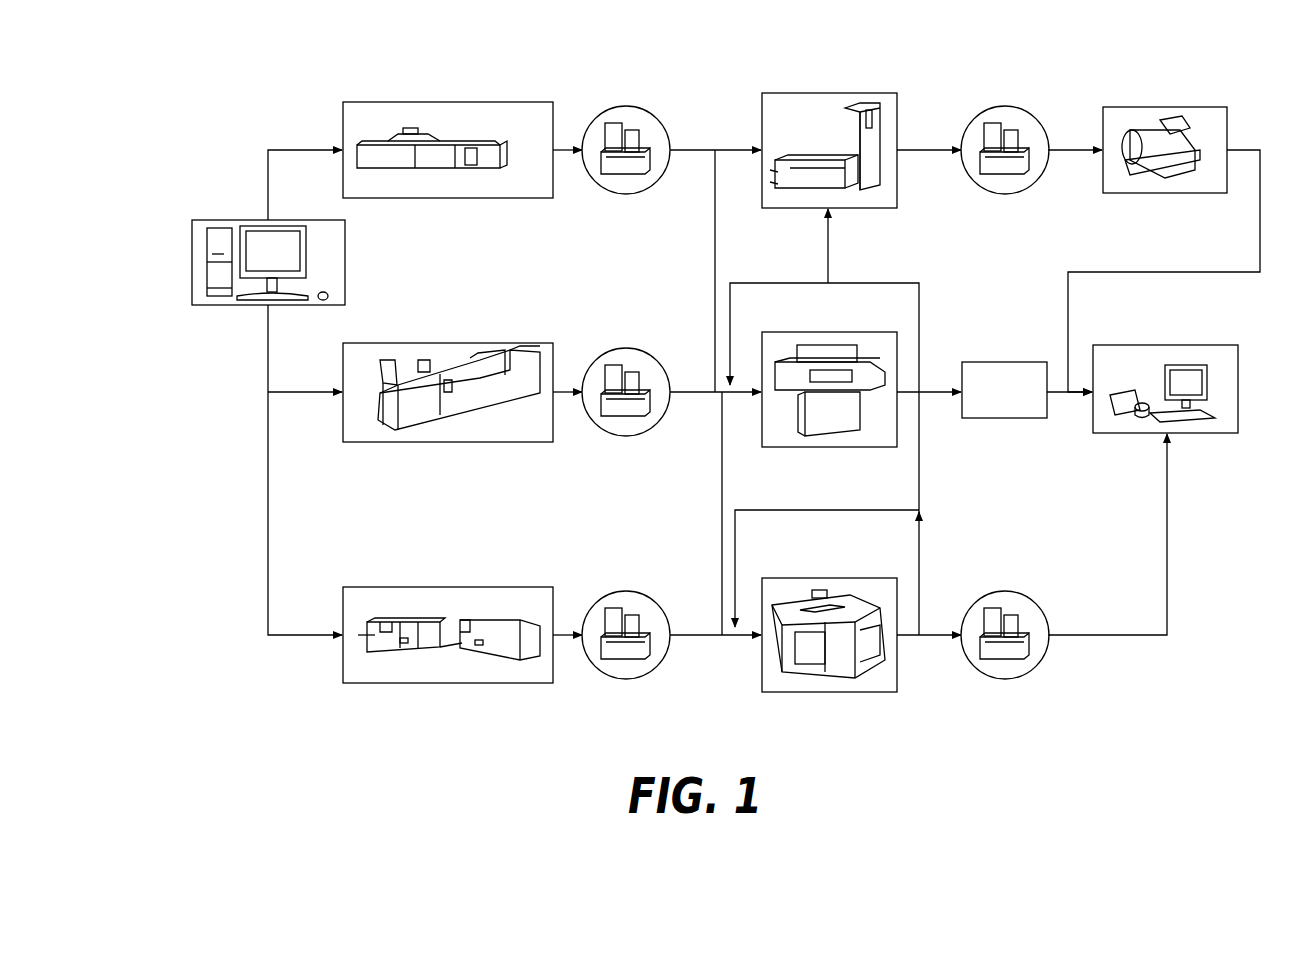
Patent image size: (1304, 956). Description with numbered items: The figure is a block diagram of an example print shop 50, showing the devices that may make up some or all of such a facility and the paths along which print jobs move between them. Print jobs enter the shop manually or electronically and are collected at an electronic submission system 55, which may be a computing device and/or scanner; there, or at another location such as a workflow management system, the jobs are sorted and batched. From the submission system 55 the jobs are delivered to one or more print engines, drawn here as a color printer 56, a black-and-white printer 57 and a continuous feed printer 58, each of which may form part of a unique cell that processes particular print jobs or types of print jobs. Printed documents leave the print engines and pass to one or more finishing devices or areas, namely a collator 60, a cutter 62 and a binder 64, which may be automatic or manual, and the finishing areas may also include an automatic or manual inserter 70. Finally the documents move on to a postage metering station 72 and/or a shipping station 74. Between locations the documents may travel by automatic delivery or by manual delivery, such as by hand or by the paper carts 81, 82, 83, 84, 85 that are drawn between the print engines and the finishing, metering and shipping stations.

The print shop 50 is at (297, 94).
The electronic submission system 55 is at (218, 306).
The color printer 56 is at (465, 199).
The black-and-white printer 57 is at (465, 443).
The continuous feed printer 58 is at (466, 684).
The collator 60 is at (838, 209).
The cutter 62 is at (838, 448).
The binder 64 is at (840, 693).
The inserter 70 is at (998, 419).
The postage metering station 72 is at (1160, 194).
The shipping station 74 is at (1193, 434).
The paper cart 81 is at (625, 193).
The paper cart 82 is at (625, 436).
The paper cart 83 is at (625, 679).
The paper cart 84 is at (1002, 194).
The paper cart 85 is at (1003, 679).